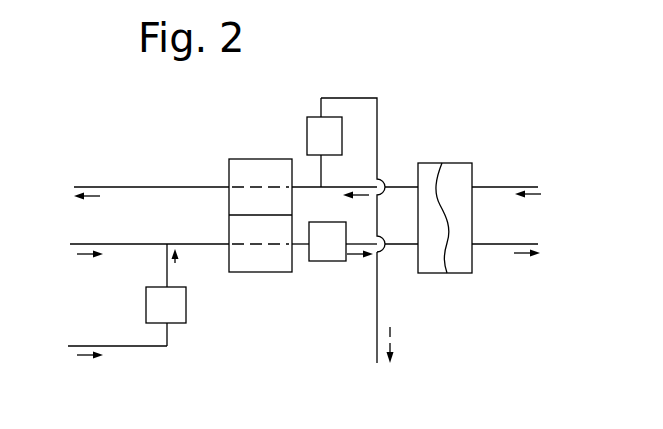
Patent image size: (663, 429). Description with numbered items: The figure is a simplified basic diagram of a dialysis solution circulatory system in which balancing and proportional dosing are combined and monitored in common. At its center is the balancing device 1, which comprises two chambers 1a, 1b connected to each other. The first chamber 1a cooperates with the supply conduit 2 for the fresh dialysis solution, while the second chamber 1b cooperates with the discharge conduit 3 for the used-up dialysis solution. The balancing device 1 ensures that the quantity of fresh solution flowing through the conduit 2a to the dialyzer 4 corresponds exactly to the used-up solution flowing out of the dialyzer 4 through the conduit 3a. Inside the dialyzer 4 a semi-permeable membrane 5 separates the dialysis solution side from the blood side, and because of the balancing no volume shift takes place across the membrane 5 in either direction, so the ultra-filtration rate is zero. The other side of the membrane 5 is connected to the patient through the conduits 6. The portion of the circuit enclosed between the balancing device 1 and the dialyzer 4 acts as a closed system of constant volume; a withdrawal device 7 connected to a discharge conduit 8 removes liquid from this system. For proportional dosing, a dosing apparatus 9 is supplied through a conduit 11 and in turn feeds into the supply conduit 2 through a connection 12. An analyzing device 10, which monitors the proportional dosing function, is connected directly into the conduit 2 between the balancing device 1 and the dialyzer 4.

The balancing device 1 is at (229, 170).
The first chamber 1a is at (281, 262).
The second chamber 1b is at (245, 165).
The supply conduit 2 is at (130, 246).
The conduit 2a is at (398, 246).
The discharge conduit 3 is at (128, 186).
The conduit 3a is at (395, 184).
The dialyzer 4 is at (437, 262).
The semi-permeable membrane 5 is at (445, 221).
The conduits 6 is at (518, 185).
The withdrawal device 7 is at (320, 133).
The discharge conduit 8 is at (377, 132).
The dosing apparatus 9 is at (158, 302).
The analyzing device 10 is at (330, 250).
The conduit 11 is at (117, 346).
The connection 12 is at (176, 280).